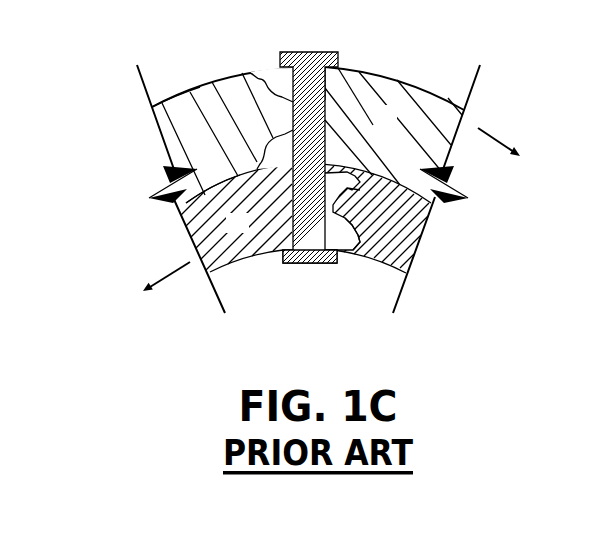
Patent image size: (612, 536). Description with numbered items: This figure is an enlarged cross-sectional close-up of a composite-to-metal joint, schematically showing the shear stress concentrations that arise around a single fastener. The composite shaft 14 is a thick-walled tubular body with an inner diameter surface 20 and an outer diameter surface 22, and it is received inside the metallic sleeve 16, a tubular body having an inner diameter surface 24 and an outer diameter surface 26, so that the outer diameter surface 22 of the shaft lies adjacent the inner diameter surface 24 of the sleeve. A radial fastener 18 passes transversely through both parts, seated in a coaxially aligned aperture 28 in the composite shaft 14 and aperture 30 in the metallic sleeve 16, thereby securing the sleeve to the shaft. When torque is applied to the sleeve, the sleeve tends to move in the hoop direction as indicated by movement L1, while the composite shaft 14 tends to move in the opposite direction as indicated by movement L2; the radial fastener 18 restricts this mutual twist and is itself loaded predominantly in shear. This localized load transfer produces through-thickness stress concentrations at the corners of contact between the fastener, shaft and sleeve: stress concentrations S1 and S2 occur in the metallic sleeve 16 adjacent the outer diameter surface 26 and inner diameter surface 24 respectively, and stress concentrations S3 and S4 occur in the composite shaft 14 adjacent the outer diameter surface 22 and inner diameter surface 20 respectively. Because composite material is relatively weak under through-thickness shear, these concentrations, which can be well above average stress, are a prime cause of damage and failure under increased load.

The composite shaft 14 is at (248, 234).
The metallic sleeve 16 is at (396, 128).
The radial fasteners 18 is at (312, 51).
The inner diameter surface 20 is at (247, 258).
The outer diameter surface 22 is at (212, 186).
The inner diameter surface 24 is at (204, 193).
The outer diameter surface 26 is at (195, 89).
The apertures 28 is at (308, 263).
The apertures 30 is at (324, 126).
The stress concentration S1 is at (270, 79).
The stress concentration S2 is at (326, 84).
The stress concentration S3 is at (354, 193).
The stress concentration S4 is at (342, 252).
The mutual movement L1 is at (499, 133).
The movement L2 is at (170, 282).